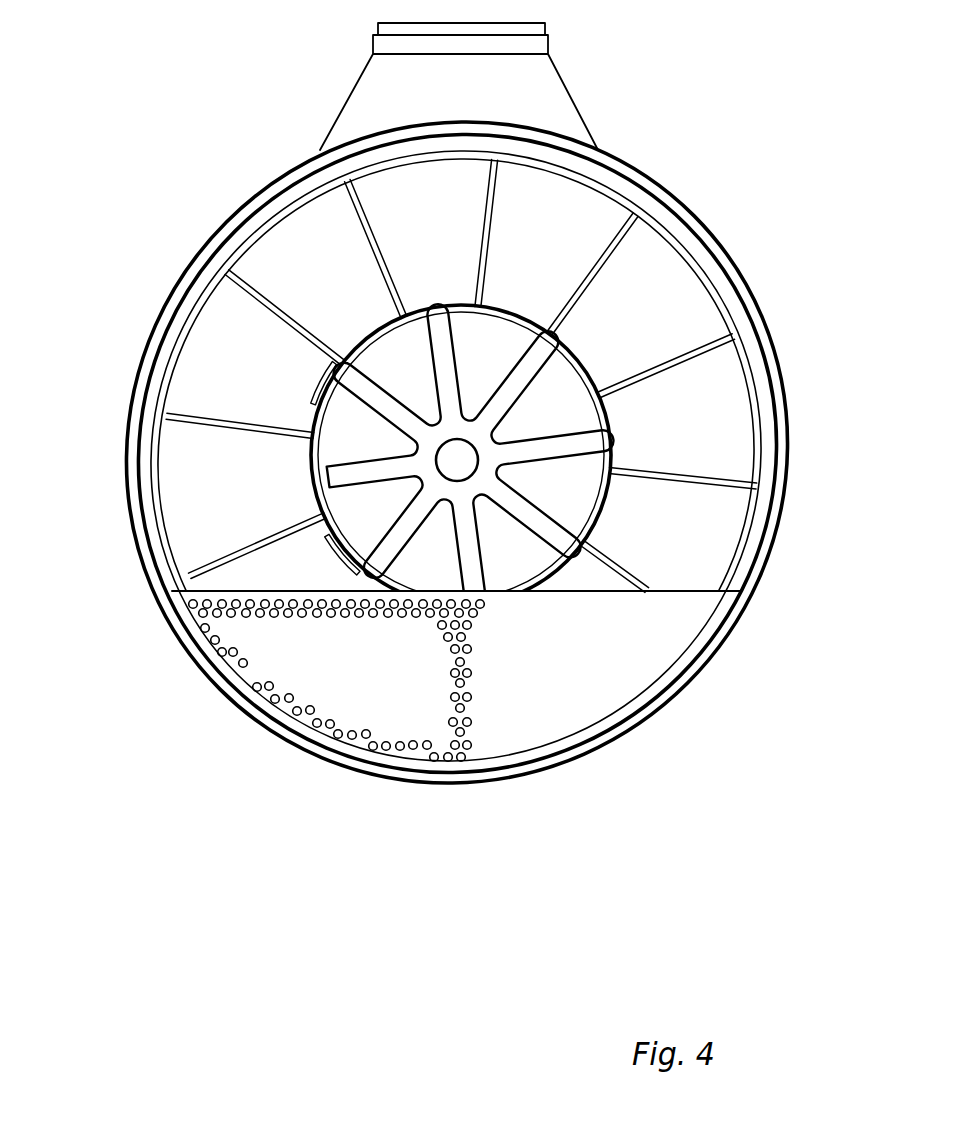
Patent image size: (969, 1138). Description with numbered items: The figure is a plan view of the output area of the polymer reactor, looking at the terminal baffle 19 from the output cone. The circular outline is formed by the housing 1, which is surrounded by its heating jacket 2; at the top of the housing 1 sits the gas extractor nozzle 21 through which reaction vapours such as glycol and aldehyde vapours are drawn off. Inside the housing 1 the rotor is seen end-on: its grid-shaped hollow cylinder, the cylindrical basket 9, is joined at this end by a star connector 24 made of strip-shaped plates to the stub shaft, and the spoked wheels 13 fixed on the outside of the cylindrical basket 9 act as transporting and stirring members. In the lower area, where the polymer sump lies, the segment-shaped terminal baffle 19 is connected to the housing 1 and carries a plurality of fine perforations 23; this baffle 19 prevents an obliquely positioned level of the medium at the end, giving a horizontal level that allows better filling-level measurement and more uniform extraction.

The housing 1 is at (773, 446).
The heating jacket 2 is at (779, 506).
The cylindrical basket 9 is at (311, 482).
The spoked wheels 13 is at (671, 240).
The terminal baffle 19 is at (678, 632).
The gas extractor nozzle 21 is at (553, 97).
The fine perforations 23 is at (249, 676).
The star connector 24 is at (585, 437).